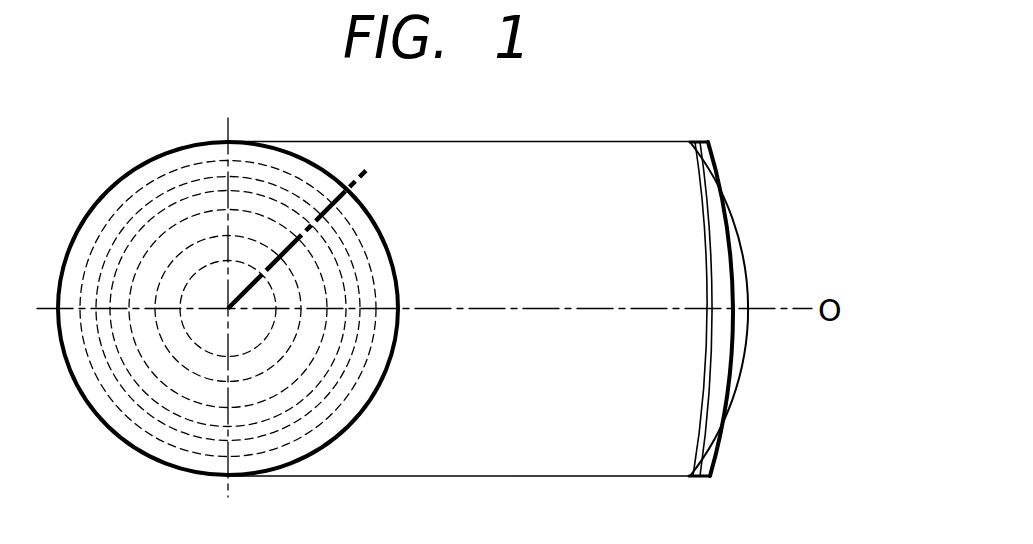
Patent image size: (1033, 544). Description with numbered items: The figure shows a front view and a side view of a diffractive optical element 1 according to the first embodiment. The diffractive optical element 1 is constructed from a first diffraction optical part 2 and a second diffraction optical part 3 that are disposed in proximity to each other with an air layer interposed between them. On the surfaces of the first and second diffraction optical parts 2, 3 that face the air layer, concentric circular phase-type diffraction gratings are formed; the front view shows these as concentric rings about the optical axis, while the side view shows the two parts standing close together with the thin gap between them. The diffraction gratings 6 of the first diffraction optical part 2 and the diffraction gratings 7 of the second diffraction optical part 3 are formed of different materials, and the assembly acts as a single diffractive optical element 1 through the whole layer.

The diffractive optical element 1 is at (343, 435).
The first diffraction optical part 2 is at (687, 95).
The second diffraction optical part 3 is at (325, 273).
The diffraction gratings 6 is at (692, 202).
The diffraction gratings 7 is at (706, 309).